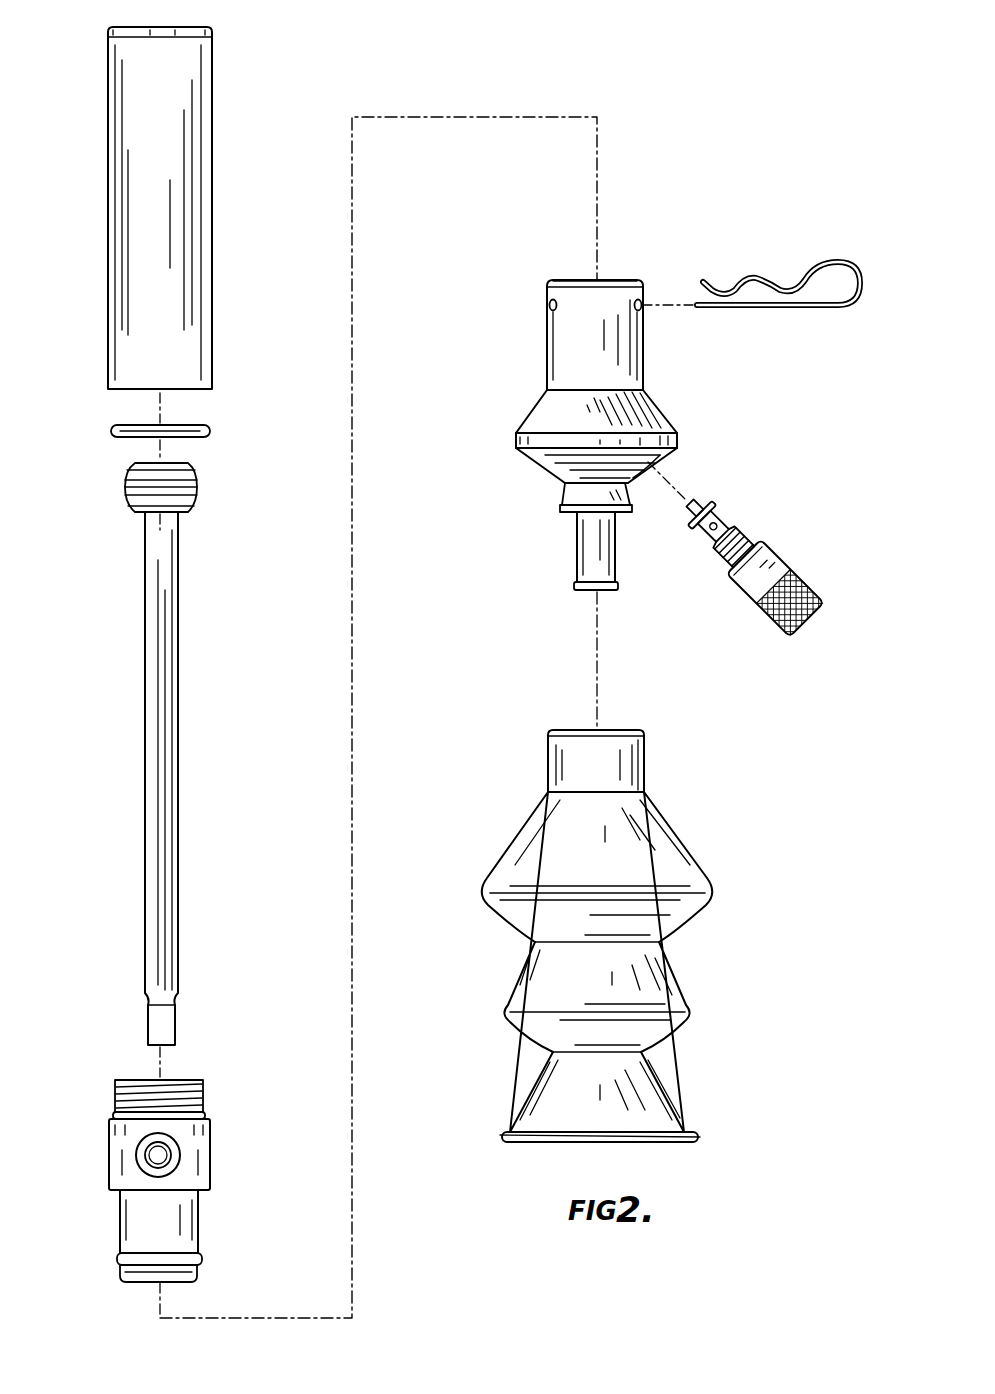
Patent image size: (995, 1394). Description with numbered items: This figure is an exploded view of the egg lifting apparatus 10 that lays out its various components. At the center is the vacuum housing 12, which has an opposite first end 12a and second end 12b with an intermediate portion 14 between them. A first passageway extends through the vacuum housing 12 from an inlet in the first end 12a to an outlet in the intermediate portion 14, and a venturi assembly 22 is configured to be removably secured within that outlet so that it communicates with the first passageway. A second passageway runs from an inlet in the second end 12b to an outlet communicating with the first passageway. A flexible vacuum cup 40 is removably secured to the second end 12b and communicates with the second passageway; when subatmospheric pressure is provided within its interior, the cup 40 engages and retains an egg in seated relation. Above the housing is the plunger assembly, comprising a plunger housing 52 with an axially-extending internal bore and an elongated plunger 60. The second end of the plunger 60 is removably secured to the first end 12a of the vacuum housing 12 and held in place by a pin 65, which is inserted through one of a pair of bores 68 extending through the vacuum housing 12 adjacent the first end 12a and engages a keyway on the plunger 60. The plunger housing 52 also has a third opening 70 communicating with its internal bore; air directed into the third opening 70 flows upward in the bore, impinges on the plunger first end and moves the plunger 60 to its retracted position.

The egg lifting apparatus 10 is at (600, 79).
The vacuum housing 12 is at (632, 352).
The vacuum housing first end 12a is at (613, 283).
The vacuum housing second end 12b is at (620, 585).
The intermediate portion 14 is at (657, 412).
The venturi assembly 22 is at (775, 565).
The flexible vacuum cup 40 is at (673, 848).
The plunger housing 52 is at (203, 207).
The elongated plunger 60 is at (148, 714).
The pin 65 is at (842, 262).
The bores 68 is at (553, 300).
The third opening 70 is at (168, 1161).